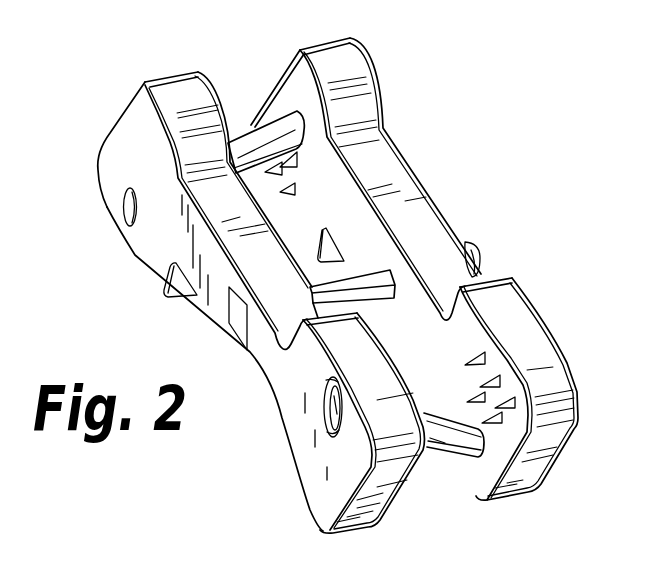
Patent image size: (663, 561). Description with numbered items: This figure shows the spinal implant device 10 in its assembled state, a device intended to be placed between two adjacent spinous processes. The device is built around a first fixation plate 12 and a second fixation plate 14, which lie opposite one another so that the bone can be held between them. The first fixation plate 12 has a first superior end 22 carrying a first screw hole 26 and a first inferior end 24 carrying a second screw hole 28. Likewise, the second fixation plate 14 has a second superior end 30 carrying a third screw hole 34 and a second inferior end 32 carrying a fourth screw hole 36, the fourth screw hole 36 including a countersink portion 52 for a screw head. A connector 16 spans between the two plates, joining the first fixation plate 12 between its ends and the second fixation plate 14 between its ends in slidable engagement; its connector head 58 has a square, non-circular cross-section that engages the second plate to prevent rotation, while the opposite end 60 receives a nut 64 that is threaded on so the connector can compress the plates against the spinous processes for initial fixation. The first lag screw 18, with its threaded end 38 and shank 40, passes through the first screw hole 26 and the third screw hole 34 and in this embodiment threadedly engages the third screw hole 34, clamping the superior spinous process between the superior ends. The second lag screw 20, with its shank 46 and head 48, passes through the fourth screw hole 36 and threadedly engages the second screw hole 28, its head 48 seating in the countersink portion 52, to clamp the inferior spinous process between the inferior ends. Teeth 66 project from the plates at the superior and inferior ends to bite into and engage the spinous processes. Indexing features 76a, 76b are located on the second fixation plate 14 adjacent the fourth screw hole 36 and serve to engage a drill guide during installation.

The spinal implant device 10 is at (93, 70).
The first fixation plate 12 is at (397, 167).
The second fixation plate 14 is at (180, 245).
The connector 16 is at (377, 280).
The first lag screw 18 is at (245, 130).
The second lag screw 20 is at (468, 448).
The first superior end 22 is at (318, 42).
The first inferior end 24 is at (540, 467).
The first screw hole 26 is at (294, 108).
The second screw hole 28 is at (487, 460).
The second superior end 30 is at (110, 160).
The second inferior end 32 is at (317, 500).
The third screw hole 34 is at (127, 219).
The fourth screw hole 36 is at (318, 428).
The threaded end 38 is at (122, 203).
The shank 40 is at (242, 118).
The shank 46 is at (437, 441).
The head 48 is at (327, 417).
The countersink portion 52 is at (328, 400).
The connector head 58 is at (232, 320).
The end 60 is at (481, 257).
The nut 64 is at (470, 244).
The teeth 66 is at (295, 189).
The indexing feature 76a is at (327, 380).
The indexing feature 76b is at (333, 443).